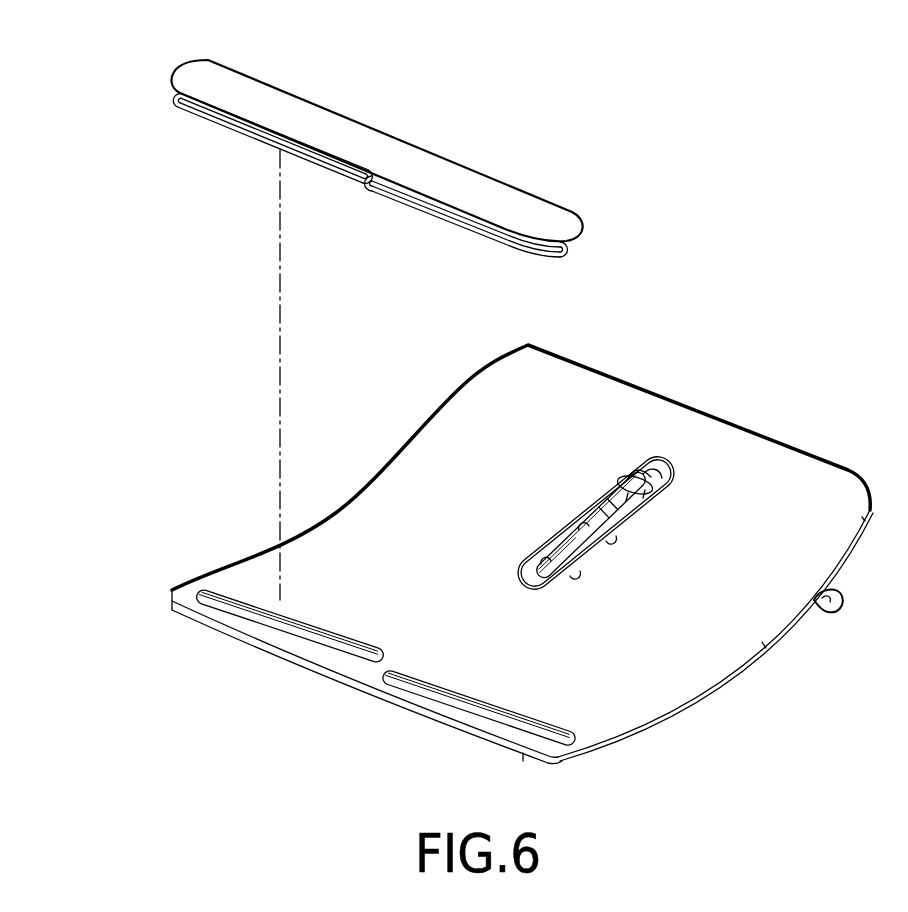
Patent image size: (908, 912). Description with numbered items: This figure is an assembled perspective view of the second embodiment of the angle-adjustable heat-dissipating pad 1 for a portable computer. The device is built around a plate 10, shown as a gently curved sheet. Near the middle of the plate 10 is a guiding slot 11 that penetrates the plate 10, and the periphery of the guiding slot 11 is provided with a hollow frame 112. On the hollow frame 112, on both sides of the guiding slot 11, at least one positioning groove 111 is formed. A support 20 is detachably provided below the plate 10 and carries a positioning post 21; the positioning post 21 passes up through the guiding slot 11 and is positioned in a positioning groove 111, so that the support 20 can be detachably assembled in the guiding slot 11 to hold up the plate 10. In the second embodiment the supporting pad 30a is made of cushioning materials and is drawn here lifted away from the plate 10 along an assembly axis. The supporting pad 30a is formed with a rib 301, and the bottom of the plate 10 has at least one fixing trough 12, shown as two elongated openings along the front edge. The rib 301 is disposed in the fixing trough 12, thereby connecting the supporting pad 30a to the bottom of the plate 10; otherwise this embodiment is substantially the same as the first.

The angle-adjustable heat-dissipating pad 1 is at (813, 190).
The plate 10 is at (667, 690).
The guiding slot 11 is at (562, 540).
The positioning groove 111 is at (580, 525).
The hollow frame 112 is at (657, 470).
The fixing trough 12 is at (317, 647).
The support 20 is at (823, 615).
The positioning post 21 is at (628, 487).
The supporting pad 30a is at (333, 120).
The rib 301 is at (248, 125).